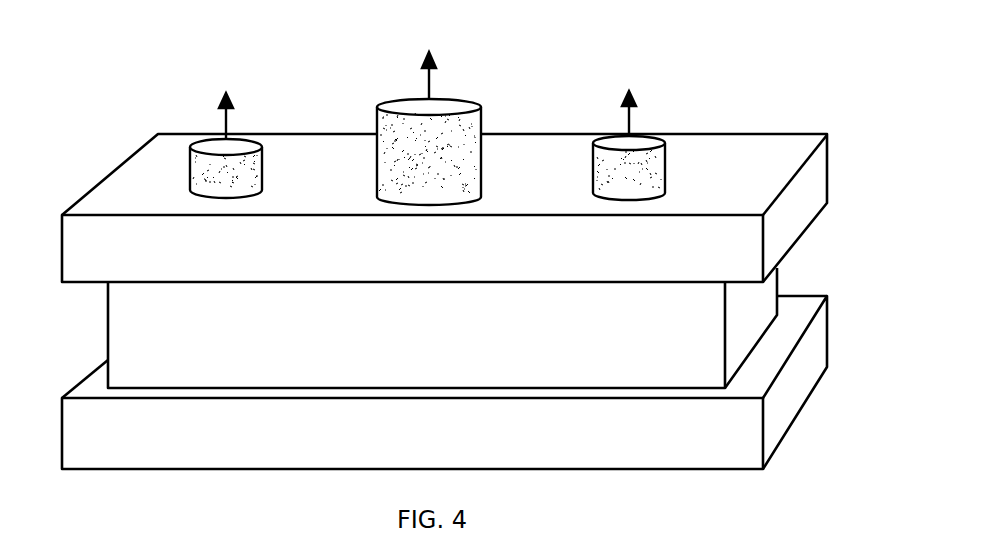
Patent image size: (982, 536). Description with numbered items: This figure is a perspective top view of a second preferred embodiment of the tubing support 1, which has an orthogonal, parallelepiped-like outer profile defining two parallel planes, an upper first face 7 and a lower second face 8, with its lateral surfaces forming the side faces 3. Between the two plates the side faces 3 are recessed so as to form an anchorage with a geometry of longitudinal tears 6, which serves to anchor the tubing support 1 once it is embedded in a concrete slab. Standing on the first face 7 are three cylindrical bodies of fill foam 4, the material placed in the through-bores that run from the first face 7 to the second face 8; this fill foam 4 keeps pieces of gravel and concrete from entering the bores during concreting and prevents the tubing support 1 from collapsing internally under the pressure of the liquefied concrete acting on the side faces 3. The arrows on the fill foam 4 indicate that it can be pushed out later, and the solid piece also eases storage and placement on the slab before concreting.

The tubing support 1 is at (734, 114).
The side faces 3 is at (59, 325).
The fill foam 4 is at (192, 163).
The longitudinal tears 6 is at (747, 320).
The first face 7 is at (780, 167).
The second face 8 is at (470, 470).